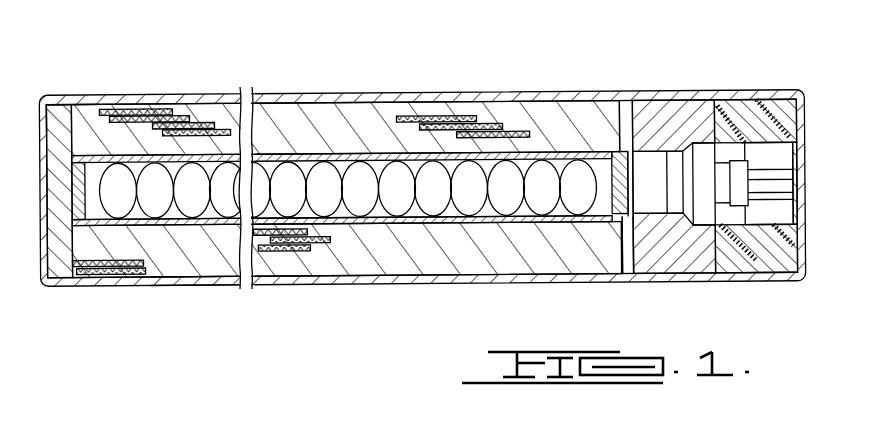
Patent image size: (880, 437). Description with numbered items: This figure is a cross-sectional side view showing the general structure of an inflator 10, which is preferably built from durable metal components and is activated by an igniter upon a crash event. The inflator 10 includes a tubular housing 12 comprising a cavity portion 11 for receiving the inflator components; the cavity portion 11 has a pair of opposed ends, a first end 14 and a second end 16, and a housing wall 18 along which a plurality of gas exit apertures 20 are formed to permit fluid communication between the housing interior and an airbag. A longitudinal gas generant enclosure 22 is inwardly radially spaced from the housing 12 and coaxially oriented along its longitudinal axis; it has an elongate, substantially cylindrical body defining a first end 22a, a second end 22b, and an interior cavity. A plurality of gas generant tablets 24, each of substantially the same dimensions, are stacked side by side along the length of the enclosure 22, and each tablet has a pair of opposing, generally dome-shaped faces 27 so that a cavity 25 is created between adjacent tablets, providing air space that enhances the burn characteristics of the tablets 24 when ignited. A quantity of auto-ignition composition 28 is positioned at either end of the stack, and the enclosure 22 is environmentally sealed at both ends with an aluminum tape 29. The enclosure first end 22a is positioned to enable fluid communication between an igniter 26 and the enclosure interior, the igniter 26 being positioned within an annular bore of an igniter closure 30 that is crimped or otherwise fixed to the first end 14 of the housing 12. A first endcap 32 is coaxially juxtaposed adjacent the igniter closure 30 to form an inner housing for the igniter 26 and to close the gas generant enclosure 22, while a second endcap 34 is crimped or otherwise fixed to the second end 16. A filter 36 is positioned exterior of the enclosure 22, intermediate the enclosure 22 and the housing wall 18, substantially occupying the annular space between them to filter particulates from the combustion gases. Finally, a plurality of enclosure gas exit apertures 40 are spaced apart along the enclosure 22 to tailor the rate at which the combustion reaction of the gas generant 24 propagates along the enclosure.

The inflator 10 is at (422, 163).
The cavity portion 11 is at (197, 304).
The tubular housing 12 is at (422, 149).
The first end 14 is at (756, 129).
The second end 16 is at (72, 83).
The housing wall 18 is at (346, 278).
The gas exit apertures 20 is at (345, 214).
The gas generant enclosure 22 is at (347, 242).
The first end 22a is at (620, 264).
The second end 22b is at (201, 280).
The gas generant tablets 24 is at (398, 133).
The cavity 25 is at (342, 107).
The igniter 26 is at (743, 136).
The dome-shaped faces 27 is at (342, 265).
The auto-ignition composition 28 is at (350, 150).
The aluminum tape 29 is at (369, 162).
The igniter closure 30 is at (761, 263).
The first endcap 32 is at (673, 207).
The second endcap 34 is at (56, 219).
The filter 36 is at (607, 231).
The enclosure gas exit apertures 40 is at (314, 103).